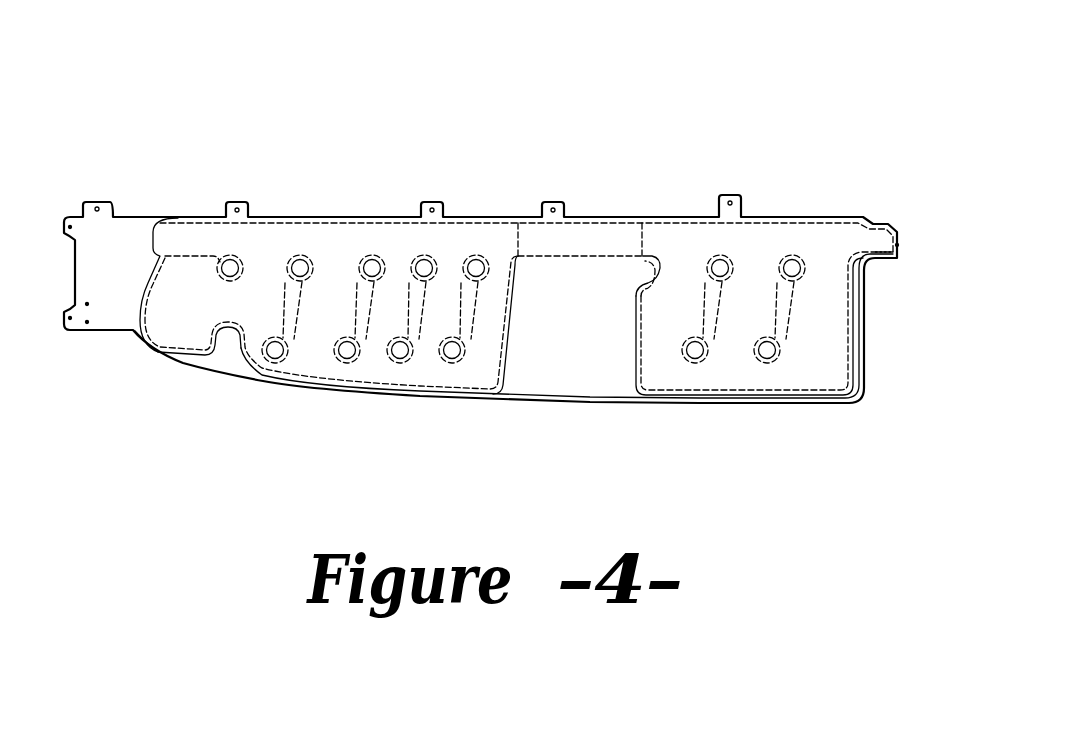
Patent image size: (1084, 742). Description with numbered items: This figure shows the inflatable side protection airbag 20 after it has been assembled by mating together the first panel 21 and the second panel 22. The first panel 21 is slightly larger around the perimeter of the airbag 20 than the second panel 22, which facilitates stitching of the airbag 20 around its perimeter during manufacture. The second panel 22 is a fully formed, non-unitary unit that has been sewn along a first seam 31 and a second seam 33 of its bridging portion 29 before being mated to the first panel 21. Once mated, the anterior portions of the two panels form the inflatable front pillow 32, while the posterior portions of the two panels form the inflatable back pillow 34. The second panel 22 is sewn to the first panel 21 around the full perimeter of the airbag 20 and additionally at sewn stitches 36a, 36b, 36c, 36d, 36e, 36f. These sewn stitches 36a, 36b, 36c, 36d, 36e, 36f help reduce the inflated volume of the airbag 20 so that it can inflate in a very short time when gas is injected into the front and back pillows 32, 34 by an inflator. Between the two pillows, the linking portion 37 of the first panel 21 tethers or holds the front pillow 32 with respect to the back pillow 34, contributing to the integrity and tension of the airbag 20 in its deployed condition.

The inflatable side protection airbag 20 is at (590, 110).
The first panel 21 is at (867, 348).
The second panel 22 is at (828, 295).
The bridging portion 29 is at (598, 235).
The first seam 31 is at (518, 243).
The front pillow 32 is at (640, 168).
The second seam 33 is at (642, 238).
The back pillow 34 is at (137, 168).
The sewn stitch 36a is at (275, 352).
The sewn stitch 36b is at (347, 352).
The sewn stitch 36c is at (400, 352).
The sewn stitch 36d is at (452, 352).
The sewn stitch 36e is at (695, 352).
The sewn stitch 36f is at (767, 352).
The linking portion 37 is at (577, 362).